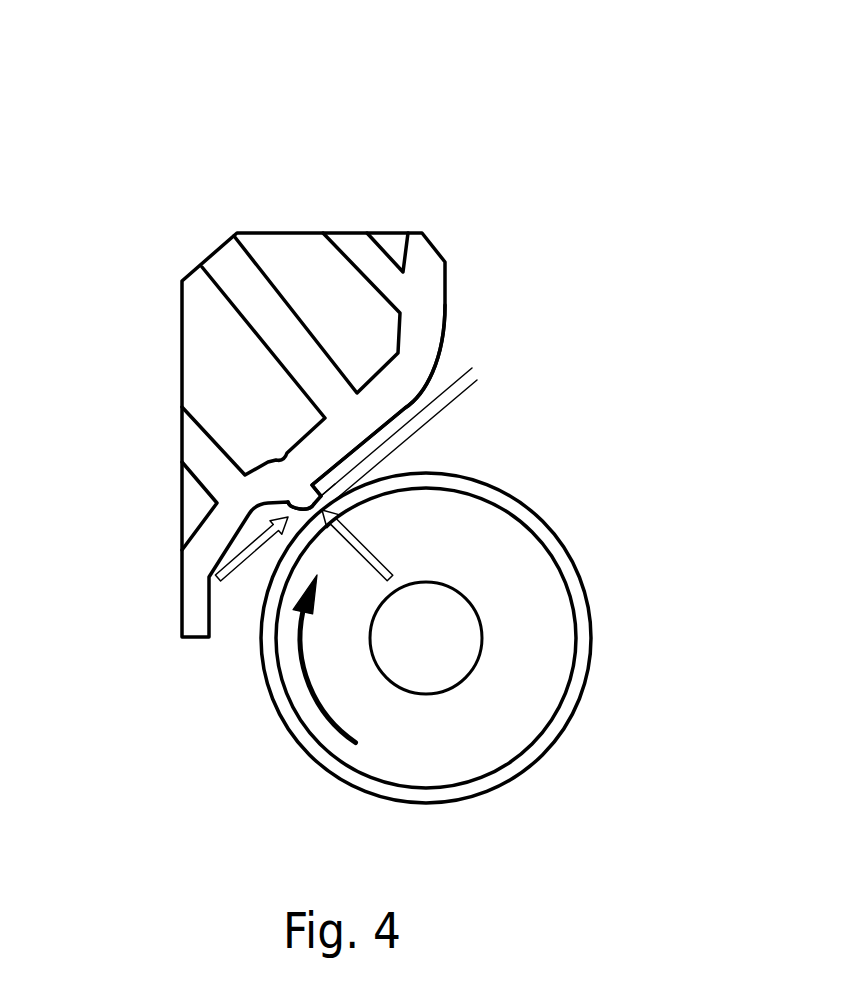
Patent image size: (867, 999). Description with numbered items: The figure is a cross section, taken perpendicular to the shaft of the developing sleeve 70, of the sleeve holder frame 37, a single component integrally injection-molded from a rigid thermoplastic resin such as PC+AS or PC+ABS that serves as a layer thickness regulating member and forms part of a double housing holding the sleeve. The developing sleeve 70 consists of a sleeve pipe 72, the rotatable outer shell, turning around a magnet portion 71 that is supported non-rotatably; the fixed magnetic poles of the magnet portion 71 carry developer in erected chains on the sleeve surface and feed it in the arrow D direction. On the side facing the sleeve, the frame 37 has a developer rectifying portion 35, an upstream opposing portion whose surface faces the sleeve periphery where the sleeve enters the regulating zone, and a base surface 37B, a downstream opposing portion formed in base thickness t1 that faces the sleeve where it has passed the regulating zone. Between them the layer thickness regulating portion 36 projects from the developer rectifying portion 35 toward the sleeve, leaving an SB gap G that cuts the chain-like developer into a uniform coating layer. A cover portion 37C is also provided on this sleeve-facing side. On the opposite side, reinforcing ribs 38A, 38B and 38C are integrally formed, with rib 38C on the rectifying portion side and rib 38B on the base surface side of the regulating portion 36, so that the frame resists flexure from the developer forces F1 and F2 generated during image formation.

The sleeve holder frame 37 is at (263, 134).
The base surface 37B is at (430, 313).
The cover portion 37C is at (372, 444).
The reinforcing rib 38A is at (225, 265).
The reinforcing rib 38B is at (372, 258).
The reinforcing rib 38C is at (203, 474).
The developer rectifying portion 35 is at (290, 503).
The layer thickness regulating portion 36 is at (326, 490).
The developing sleeve 70 is at (498, 638).
The magnet portion 71 is at (562, 626).
The sleeve pipe 72 is at (563, 713).
The SB gap G is at (450, 363).
The base thickness t1 is at (333, 467).
The force F1 is at (251, 561).
The force F2 is at (362, 545).
The arrow direction D is at (324, 659).